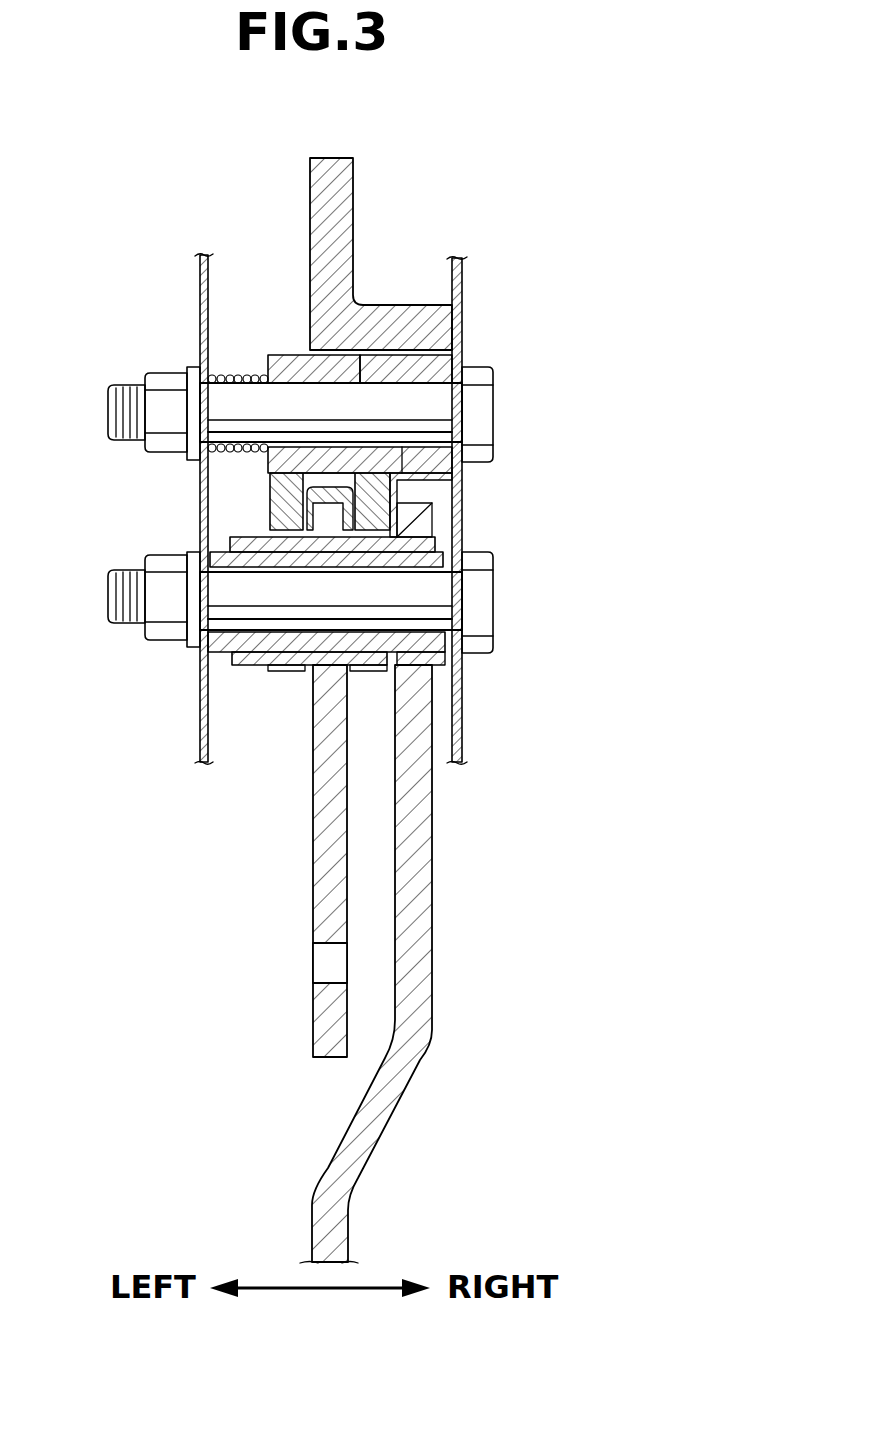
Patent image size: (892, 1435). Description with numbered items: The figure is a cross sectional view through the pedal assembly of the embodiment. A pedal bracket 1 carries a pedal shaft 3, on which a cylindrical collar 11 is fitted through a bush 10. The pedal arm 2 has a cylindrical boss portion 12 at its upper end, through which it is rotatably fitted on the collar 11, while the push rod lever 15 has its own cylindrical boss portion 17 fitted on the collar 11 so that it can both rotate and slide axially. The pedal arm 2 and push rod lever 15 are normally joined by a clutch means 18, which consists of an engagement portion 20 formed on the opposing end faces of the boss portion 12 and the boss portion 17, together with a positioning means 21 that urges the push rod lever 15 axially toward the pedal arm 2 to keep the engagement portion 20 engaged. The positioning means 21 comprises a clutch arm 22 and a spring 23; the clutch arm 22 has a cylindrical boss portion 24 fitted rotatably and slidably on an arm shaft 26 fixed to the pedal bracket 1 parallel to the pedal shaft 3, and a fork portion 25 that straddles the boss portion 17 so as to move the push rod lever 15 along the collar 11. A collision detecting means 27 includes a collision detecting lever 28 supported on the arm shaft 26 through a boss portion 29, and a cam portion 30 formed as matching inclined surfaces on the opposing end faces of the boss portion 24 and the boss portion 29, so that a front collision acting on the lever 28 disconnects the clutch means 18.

The pedal bracket 1 is at (198, 312).
The pedal arm 2 is at (433, 880).
The pedal shaft 3 is at (268, 669).
The bush 10 is at (215, 612).
The collar 11 is at (445, 655).
The boss portion 12 is at (444, 555).
The push rod lever 15 is at (312, 848).
The boss portion 17 is at (243, 667).
The clutch means 18 is at (436, 521).
The engagement portion 20 is at (376, 543).
The positioning means 21 is at (400, 492).
The clutch arm 22 is at (262, 464).
The spring 23 is at (229, 372).
The boss portion 24 is at (278, 355).
The fork portion 25 is at (268, 501).
The arm shaft 26 is at (440, 403).
The collision detecting means 27 is at (423, 252).
The collision detecting lever 28 is at (345, 172).
The boss portion 29 is at (463, 482).
The cam portion 30 is at (368, 371).